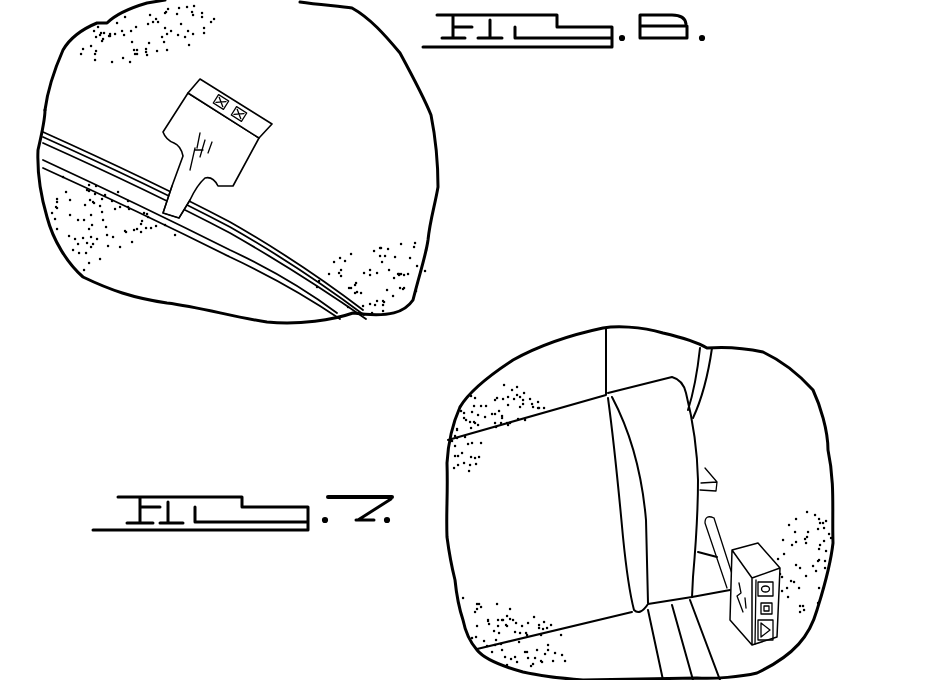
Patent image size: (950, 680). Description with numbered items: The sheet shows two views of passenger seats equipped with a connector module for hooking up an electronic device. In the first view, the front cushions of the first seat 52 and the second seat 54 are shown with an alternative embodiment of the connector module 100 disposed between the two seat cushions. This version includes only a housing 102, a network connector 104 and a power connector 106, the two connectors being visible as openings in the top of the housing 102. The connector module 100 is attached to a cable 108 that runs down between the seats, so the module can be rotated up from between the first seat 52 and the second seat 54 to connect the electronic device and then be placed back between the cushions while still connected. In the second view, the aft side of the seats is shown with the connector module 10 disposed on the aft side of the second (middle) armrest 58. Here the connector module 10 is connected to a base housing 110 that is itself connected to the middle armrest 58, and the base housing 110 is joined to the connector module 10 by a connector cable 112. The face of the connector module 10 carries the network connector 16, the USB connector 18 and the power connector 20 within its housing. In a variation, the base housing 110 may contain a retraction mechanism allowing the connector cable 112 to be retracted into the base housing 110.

In FIG. 7, the connector module 10 is at (790, 572).
In FIG. 7, the RJ-45 network connector 16 is at (777, 643).
In FIG. 7, the USB connector 18 is at (777, 609).
In FIG. 7, the ARINC 628 power connector 20 is at (773, 568).
In FIG. 6, the first seat 52 is at (267, 297).
In FIG. 7, the first seat 52 is at (467, 586).
In FIG. 6, the second seat 54 is at (410, 222).
In FIG. 7, the second seat 54 is at (808, 427).
In FIG. 7, the second (middle) armrest 58 is at (211, 675).
In FIG. 6, the connector module 100 is at (263, 159).
In FIG. 6, the housing 102 is at (233, 161).
In FIG. 6, the RJ-45 connector 104 is at (220, 97).
In FIG. 6, the power connector 106 is at (247, 110).
In FIG. 6, the cable 108 is at (176, 222).
In FIG. 7, the base housing 110 is at (713, 481).
In FIG. 7, the connector cable 112 is at (722, 523).